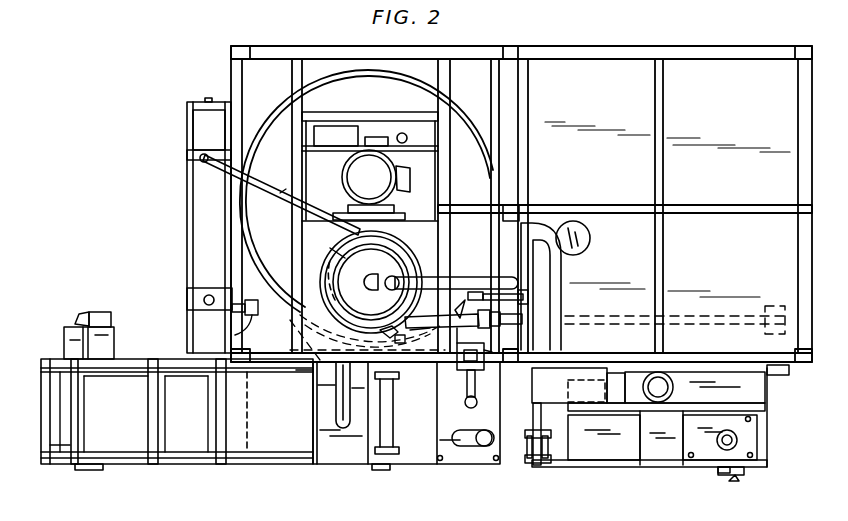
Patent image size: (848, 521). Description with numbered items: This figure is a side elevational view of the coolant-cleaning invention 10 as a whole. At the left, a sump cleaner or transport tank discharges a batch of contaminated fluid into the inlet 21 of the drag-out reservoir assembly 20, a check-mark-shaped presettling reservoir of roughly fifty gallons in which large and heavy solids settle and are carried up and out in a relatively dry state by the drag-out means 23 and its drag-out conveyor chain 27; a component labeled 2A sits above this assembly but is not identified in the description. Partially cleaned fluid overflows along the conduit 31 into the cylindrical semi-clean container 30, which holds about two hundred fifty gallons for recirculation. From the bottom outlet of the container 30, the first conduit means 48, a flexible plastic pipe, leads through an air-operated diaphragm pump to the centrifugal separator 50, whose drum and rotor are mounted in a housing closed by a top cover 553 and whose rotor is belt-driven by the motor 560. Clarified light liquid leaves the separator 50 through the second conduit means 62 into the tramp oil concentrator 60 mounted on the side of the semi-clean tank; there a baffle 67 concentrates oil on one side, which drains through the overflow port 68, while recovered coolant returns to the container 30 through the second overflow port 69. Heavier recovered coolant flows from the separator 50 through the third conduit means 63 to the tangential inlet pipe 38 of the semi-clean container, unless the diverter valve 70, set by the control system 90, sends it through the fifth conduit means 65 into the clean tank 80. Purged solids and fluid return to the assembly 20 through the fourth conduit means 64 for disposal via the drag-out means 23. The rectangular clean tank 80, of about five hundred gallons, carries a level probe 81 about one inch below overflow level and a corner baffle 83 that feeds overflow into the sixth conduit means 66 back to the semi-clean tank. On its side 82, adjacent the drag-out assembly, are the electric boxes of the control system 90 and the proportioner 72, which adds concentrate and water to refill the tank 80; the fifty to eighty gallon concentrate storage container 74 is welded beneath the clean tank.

The invention 10 is at (146, 58).
The drag-out reservoir assembly 20 is at (203, 466).
The inlet 21 is at (486, 450).
The drag-out means 23 is at (270, 457).
The drag-out conveyor chain 27 is at (214, 428).
The film supply unit 2A is at (62, 432).
The semi-clean container 30 is at (272, 104).
The conduit 31 is at (288, 347).
The inlet pipe 38 is at (462, 372).
The first conduit means 48 is at (432, 275).
The centrifugal separator 50 is at (318, 273).
The top cover 553 is at (330, 248).
The motor 560 is at (350, 178).
The tramp oil concentrator 60 is at (185, 215).
The second conduit means 62 is at (280, 193).
The third conduit means 63 is at (405, 342).
The fourth conduit means 64 is at (338, 406).
The fifth conduit means 65 is at (613, 318).
The sixth conduit means 66 is at (498, 282).
The baffle 67 is at (196, 163).
The overflow port 68 is at (207, 99).
The second overflow port 69 is at (252, 316).
The diverter valve 70 is at (486, 373).
The proportioner 72 is at (620, 452).
The concentrate storage container 74 is at (667, 456).
The clean tank 80 is at (699, 92).
The level probe 81 is at (591, 240).
The side of clean tank 82 is at (787, 375).
The baffle 83 is at (546, 272).
The control system 90 is at (591, 375).